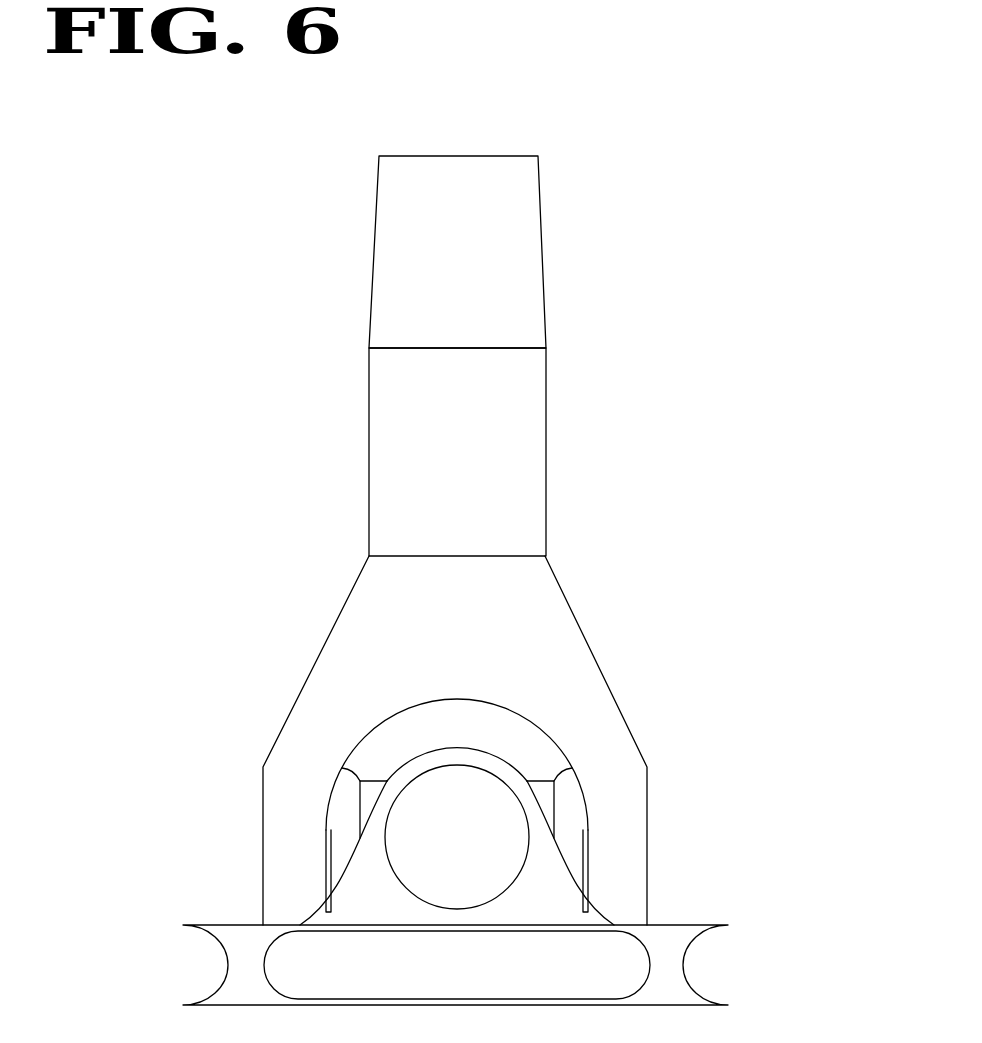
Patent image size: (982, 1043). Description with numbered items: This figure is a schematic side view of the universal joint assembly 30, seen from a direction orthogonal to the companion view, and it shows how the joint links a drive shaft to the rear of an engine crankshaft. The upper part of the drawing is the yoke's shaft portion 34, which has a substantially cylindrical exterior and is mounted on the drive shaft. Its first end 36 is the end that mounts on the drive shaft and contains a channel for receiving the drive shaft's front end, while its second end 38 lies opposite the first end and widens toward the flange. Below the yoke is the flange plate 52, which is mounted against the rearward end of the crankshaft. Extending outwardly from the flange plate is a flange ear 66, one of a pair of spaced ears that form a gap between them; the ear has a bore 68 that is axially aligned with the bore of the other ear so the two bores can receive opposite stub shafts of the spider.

The joint assembly 30 is at (329, 443).
The shaft portion 34 is at (516, 447).
The first end 36 is at (493, 230).
The second end 38 is at (519, 646).
The flange plate 52 is at (677, 958).
The flange ear 66 is at (538, 892).
The bore 68 is at (387, 818).